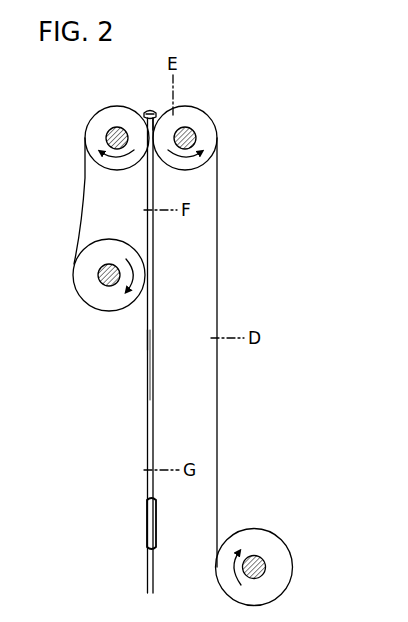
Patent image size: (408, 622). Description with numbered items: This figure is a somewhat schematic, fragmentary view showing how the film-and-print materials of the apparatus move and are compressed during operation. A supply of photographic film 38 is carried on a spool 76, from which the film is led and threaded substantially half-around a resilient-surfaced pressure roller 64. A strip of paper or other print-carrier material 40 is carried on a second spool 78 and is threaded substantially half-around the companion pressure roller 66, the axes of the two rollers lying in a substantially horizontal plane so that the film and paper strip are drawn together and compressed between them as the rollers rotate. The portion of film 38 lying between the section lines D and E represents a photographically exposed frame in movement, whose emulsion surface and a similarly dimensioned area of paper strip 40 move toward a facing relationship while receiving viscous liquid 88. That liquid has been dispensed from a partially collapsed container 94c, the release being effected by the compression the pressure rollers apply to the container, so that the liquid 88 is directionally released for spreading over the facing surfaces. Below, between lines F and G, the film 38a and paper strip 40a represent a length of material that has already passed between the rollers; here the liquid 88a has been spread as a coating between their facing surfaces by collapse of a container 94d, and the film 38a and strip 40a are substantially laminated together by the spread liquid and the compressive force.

The photographic film 38 is at (217, 414).
The film 38a is at (153, 310).
The paper strip 40 is at (85, 187).
The paper strip 40a is at (147, 340).
The pressure roller 64 is at (217, 150).
The pressure roller 66 is at (96, 121).
The spool 76 is at (272, 540).
The spool 78 is at (82, 290).
The viscous liquid 88 is at (150, 112).
The liquid coating 88a is at (148, 386).
The partially collapsed container 94c is at (160, 125).
The container 94d is at (147, 521).